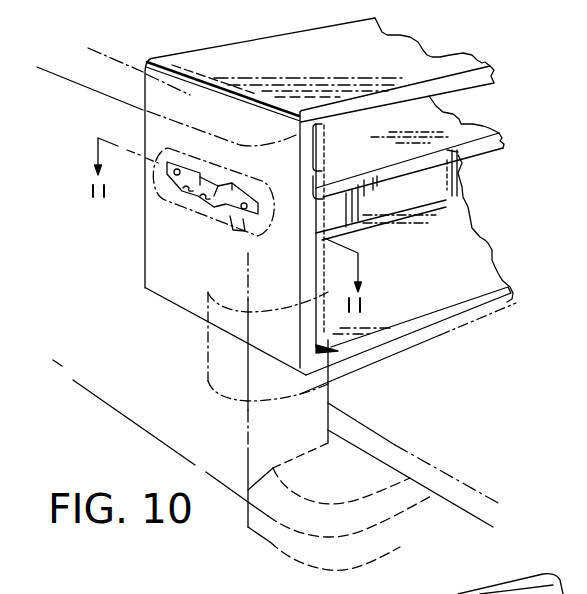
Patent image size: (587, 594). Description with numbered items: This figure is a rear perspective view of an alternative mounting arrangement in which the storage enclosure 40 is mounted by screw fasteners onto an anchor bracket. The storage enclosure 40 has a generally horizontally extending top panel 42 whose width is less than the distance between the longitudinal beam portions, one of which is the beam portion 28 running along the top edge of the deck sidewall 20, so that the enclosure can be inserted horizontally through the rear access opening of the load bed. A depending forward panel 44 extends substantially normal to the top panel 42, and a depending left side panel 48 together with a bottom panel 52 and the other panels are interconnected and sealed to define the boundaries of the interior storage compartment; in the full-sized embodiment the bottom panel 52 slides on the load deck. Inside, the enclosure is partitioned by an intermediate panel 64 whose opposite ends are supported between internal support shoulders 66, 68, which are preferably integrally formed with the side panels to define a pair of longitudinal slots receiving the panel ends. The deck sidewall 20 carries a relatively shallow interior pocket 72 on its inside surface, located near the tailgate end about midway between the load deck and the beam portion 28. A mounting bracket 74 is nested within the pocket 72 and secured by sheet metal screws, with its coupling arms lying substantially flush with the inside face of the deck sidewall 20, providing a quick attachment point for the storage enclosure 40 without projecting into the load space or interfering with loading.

The deck sidewall 20 is at (176, 382).
The longitudinal beam portion 28 is at (432, 593).
The storage enclosure 40 is at (432, 31).
The top panel 42 is at (334, 63).
The depending forward panel 44 is at (432, 182).
The depending left side panel 48 is at (190, 290).
The bottom panel 52 is at (470, 256).
The intermediate panel 64 is at (457, 123).
The internal support shoulder 66 is at (326, 199).
The internal support shoulder 68 is at (323, 167).
The interior pocket 72 is at (207, 217).
The mounting bracket 74 is at (228, 157).